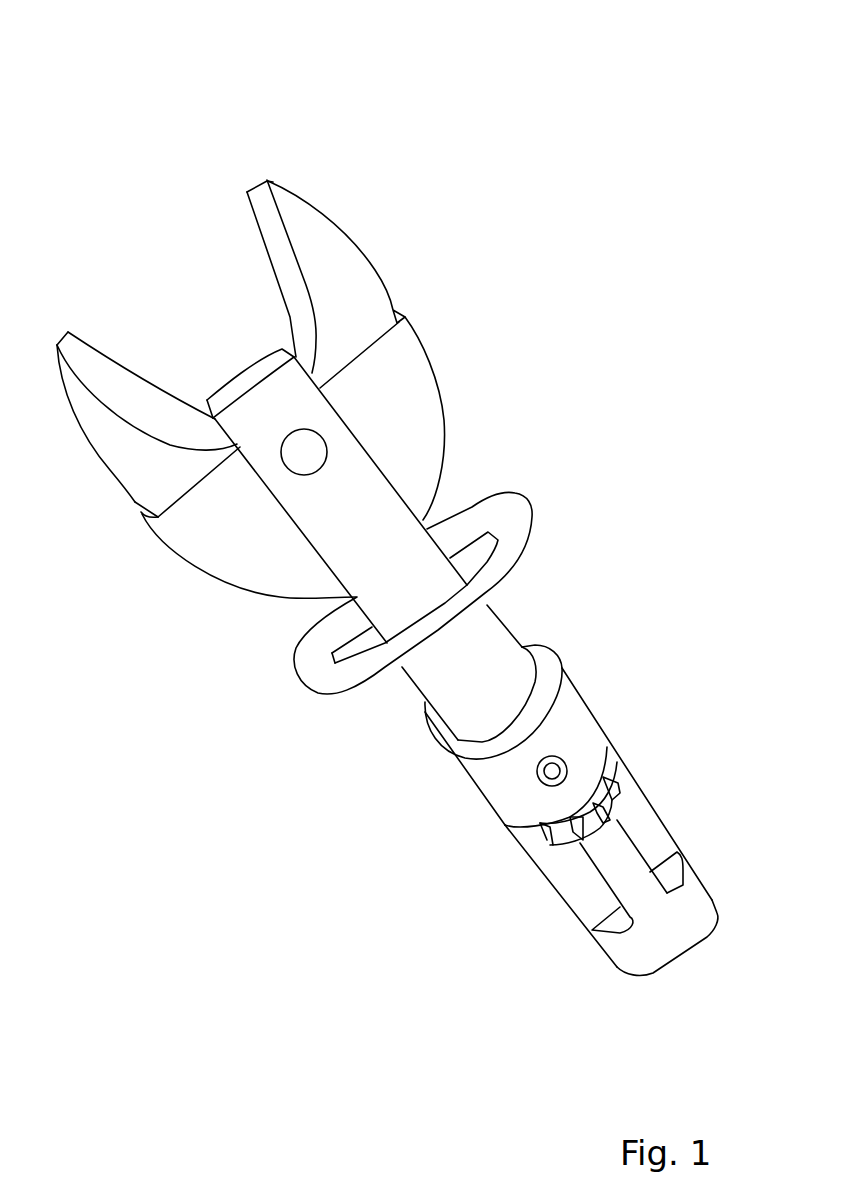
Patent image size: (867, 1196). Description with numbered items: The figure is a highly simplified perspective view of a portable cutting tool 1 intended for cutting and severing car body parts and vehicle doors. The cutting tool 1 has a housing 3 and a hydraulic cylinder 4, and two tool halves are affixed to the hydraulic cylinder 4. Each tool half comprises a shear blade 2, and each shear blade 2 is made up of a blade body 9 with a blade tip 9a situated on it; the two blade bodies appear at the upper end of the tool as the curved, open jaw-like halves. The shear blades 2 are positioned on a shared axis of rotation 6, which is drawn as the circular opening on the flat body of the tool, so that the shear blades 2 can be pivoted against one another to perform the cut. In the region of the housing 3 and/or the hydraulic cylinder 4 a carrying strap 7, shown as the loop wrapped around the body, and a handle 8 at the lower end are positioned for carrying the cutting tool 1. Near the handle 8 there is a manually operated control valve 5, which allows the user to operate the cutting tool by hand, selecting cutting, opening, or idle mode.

The cutting tool 1 is at (420, 50).
The shear blade 2 is at (407, 227).
The housing 3 is at (577, 707).
The hydraulic cylinder 4 is at (363, 553).
The control valve 5 is at (605, 800).
The axis of rotation 6 is at (308, 445).
The carrying strap 7 is at (512, 515).
The handle 8 is at (607, 867).
The blade body 9 is at (317, 237).
The blade tip 9a is at (244, 189).